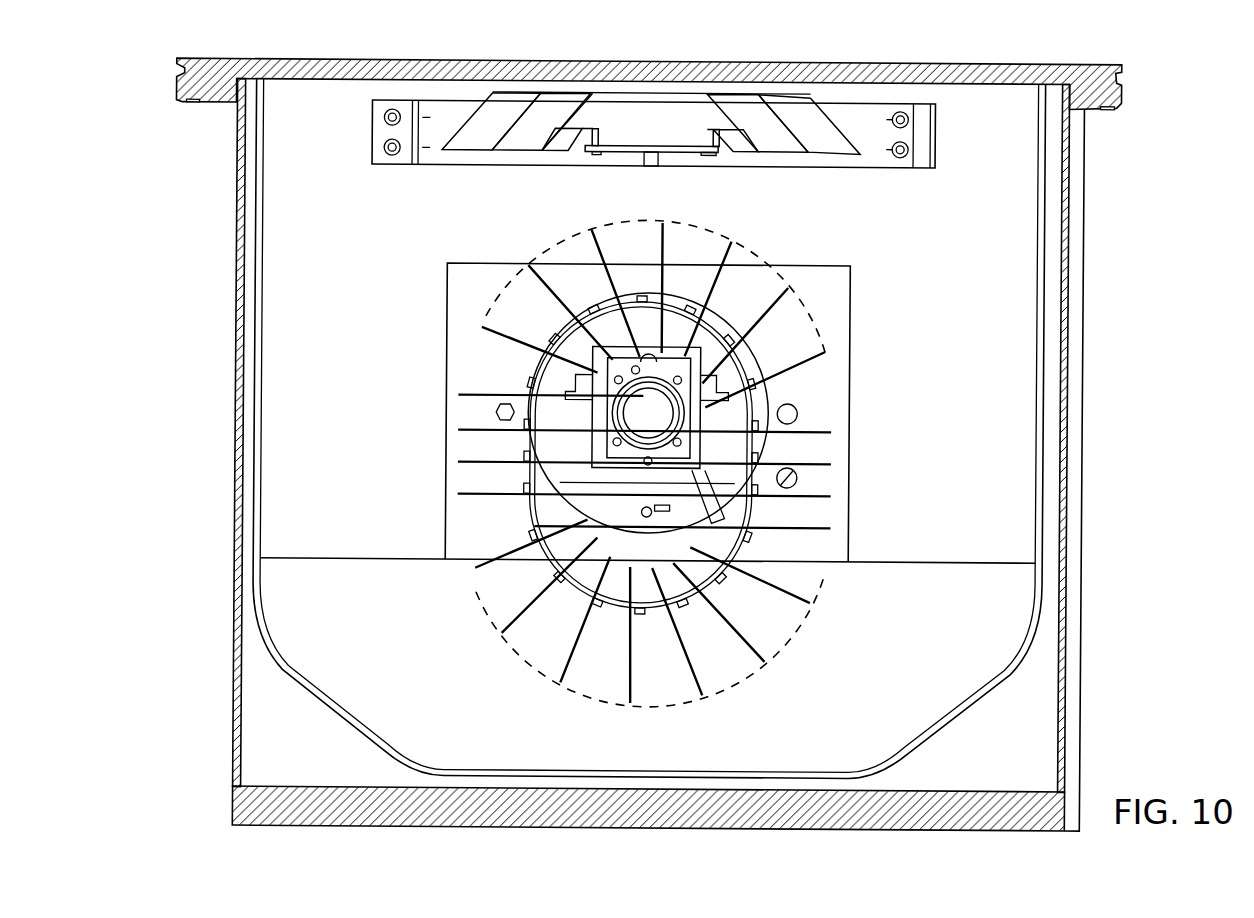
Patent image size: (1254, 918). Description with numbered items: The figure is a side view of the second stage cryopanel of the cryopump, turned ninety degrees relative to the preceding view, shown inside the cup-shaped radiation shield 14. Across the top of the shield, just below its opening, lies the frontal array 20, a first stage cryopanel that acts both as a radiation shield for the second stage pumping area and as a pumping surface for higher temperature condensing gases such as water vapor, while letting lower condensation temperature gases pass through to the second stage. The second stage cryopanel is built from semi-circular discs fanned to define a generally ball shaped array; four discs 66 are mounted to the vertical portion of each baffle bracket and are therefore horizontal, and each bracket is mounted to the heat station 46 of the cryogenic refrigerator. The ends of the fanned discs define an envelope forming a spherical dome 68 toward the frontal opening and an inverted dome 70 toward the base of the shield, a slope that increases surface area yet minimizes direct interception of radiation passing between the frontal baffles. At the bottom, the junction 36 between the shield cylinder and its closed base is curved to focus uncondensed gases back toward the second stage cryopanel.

The radiation shield 14 is at (258, 462).
The frontal array 20 is at (861, 181).
The junction 36 is at (357, 727).
The heat station 46 is at (663, 385).
The discs 66 is at (458, 463).
The spherical dome 68 is at (702, 218).
The inverted dome 70 is at (720, 688).